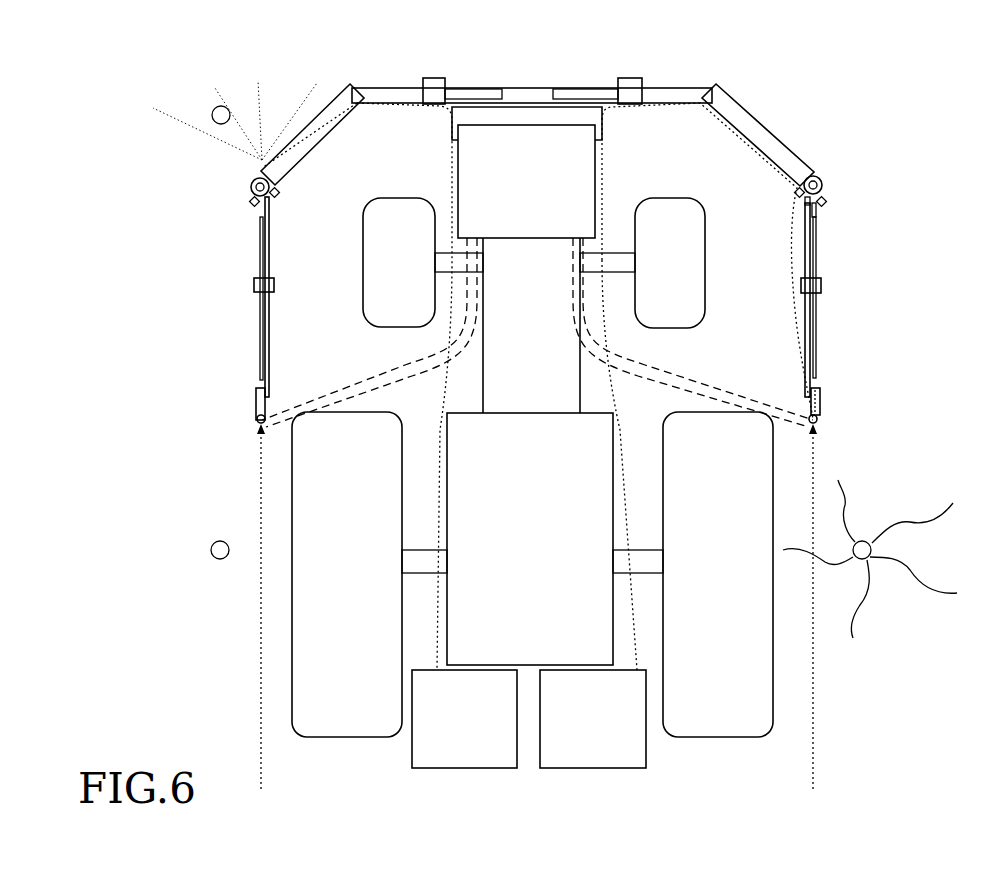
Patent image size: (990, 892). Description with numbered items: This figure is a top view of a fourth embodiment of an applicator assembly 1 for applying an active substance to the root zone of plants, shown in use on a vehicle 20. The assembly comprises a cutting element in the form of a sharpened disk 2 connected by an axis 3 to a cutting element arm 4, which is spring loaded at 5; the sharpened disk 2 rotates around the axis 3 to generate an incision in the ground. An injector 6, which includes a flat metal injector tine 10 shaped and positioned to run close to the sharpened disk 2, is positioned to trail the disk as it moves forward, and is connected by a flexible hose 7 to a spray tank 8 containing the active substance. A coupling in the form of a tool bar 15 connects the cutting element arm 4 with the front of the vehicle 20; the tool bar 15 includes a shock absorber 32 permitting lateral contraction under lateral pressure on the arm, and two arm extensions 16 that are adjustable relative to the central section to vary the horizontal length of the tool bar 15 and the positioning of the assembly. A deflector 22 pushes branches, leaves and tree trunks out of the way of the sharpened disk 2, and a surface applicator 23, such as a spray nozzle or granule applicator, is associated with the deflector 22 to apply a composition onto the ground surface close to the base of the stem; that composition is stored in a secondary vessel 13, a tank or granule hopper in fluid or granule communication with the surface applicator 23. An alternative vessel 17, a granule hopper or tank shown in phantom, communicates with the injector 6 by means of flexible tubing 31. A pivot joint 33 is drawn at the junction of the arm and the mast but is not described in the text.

The applicator assembly 1 is at (212, 343).
The sharpened disk 2 is at (260, 322).
The axis 3 is at (275, 285).
The cutting element arm 4 is at (807, 200).
The spring loading 5 is at (813, 212).
The injector 6 is at (260, 421).
The flexible hose 7 is at (613, 120).
The spray tank 8 is at (632, 758).
The injector tine 10 is at (255, 393).
The secondary vessel 13 is at (437, 757).
The tool bar 15 is at (527, 94).
The arm extensions 16 is at (404, 94).
The alternative vessel 17 is at (538, 225).
The vehicle 20 is at (560, 388).
The deflector 22 is at (343, 100).
The surface applicator 23 is at (260, 153).
The flexible tubing 31 is at (393, 370).
The shock absorber 32 is at (591, 93).
The pivot joint 33 is at (802, 167).